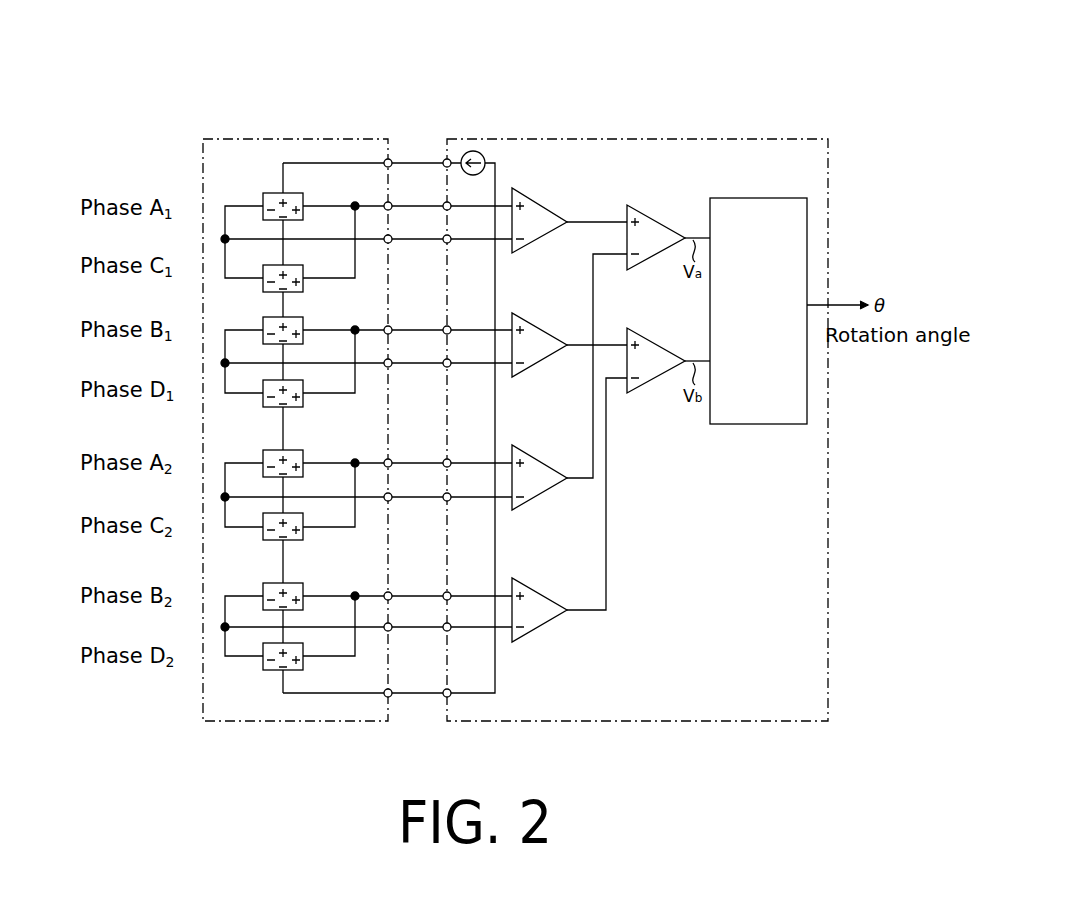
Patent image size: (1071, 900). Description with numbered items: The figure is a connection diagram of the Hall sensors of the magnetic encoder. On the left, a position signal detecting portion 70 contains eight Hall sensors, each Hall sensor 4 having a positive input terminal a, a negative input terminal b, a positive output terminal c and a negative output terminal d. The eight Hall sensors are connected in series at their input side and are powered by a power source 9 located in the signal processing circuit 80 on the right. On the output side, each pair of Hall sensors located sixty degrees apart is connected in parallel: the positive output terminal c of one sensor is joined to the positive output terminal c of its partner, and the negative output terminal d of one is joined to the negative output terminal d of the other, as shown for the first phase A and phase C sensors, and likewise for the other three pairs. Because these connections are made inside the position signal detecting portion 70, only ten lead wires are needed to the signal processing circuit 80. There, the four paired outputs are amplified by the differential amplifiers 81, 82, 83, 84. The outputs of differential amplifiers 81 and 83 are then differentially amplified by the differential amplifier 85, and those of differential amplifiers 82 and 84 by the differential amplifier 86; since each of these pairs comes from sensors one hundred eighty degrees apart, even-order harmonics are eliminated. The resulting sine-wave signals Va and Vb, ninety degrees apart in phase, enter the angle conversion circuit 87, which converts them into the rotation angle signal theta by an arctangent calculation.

The position signal detecting portion 70 is at (231, 138).
The signal processing circuit 80 is at (572, 138).
The Hall sensor 4 is at (278, 170).
The power source 9 is at (474, 151).
The differential amplifier 81 is at (540, 201).
The differential amplifier 82 is at (542, 324).
The differential amplifier 83 is at (542, 457).
The differential amplifier 84 is at (542, 590).
The differential amplifier 85 is at (652, 216).
The differential amplifier 86 is at (656, 339).
The angle conversion circuit 87 is at (745, 198).
The positive input terminal a is at (285, 193).
The negative input terminal b is at (281, 221).
The positive output terminal c is at (303, 210).
The negative output terminal d is at (264, 203).